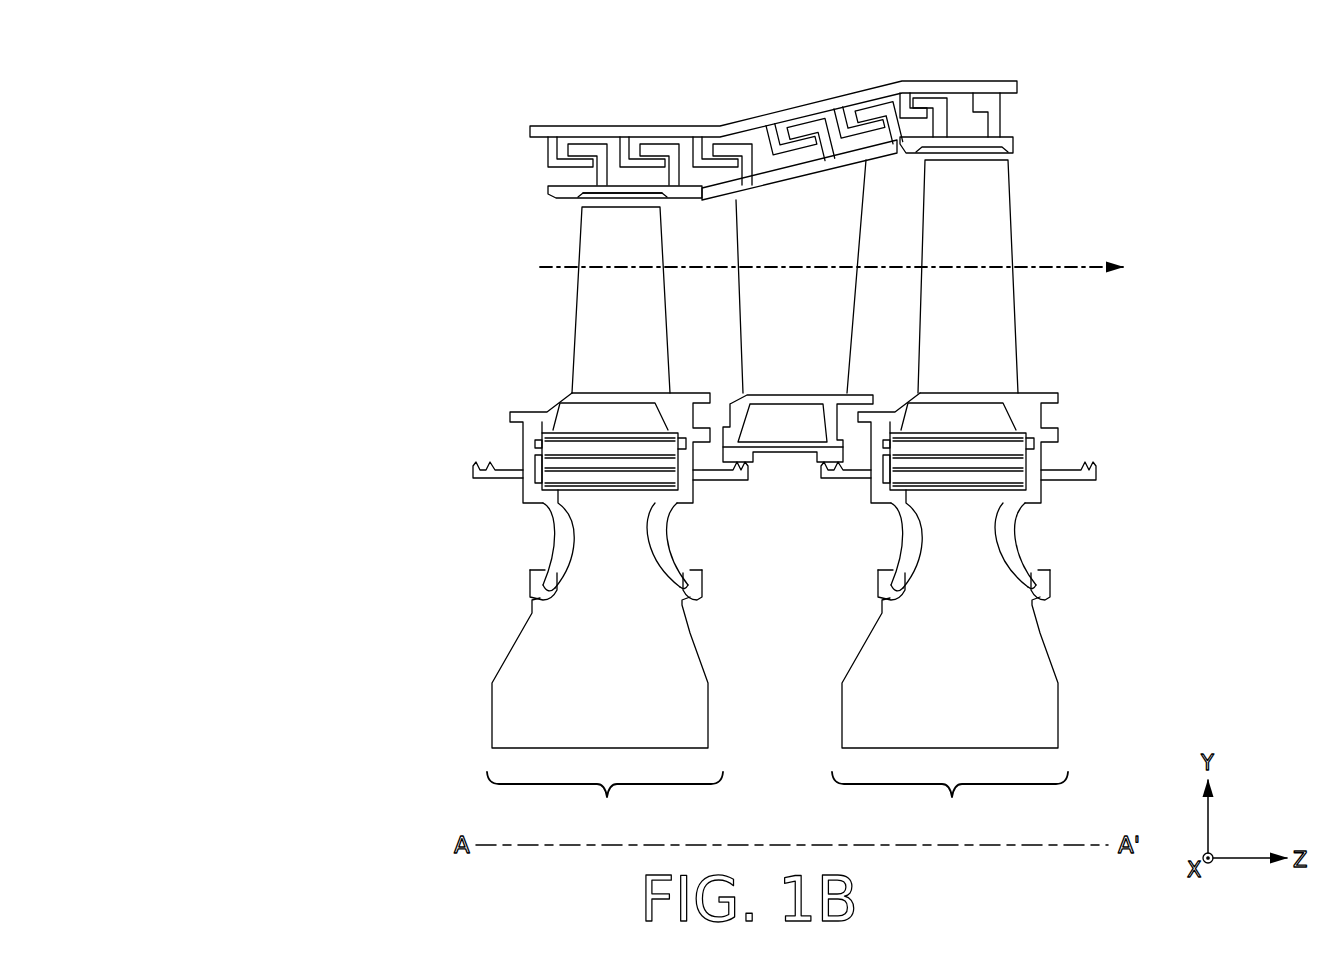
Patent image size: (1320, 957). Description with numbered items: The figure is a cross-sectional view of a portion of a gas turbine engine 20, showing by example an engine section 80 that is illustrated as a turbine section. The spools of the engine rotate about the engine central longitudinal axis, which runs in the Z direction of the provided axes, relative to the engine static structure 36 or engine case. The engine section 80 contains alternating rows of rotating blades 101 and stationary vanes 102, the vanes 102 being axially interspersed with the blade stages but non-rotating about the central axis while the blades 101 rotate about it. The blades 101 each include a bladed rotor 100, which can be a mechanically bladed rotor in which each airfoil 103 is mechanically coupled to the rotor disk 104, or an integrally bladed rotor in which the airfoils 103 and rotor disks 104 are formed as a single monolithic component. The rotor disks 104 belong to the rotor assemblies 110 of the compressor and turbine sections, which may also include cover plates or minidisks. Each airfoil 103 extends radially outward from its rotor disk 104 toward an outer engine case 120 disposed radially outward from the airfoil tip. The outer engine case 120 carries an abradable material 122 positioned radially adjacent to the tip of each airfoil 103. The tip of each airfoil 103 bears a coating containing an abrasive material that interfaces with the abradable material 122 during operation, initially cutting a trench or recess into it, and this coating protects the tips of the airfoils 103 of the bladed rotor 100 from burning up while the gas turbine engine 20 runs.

The gas turbine engine 20 is at (235, 148).
The engine section 80 is at (375, 133).
The engine static structure 36 is at (583, 130).
The bladed rotor 100 is at (803, 198).
The blades 101 is at (566, 230).
The vanes 102 is at (847, 183).
The airfoil 103 is at (628, 337).
The rotor disk 104 is at (627, 677).
The rotor assemblies 110 is at (784, 614).
The outer engine case 120 is at (620, 203).
The abradable material 122 is at (613, 197).